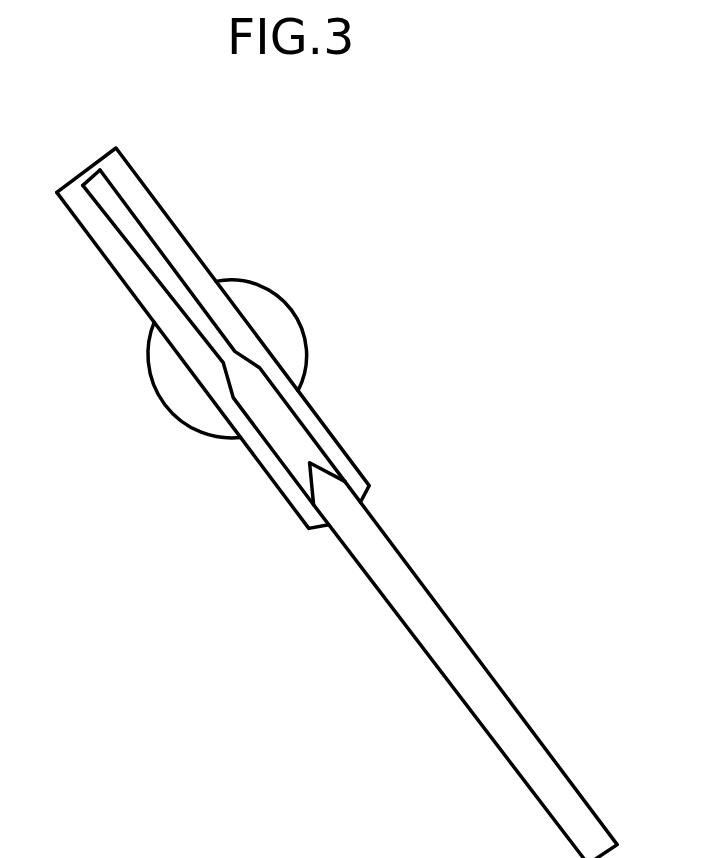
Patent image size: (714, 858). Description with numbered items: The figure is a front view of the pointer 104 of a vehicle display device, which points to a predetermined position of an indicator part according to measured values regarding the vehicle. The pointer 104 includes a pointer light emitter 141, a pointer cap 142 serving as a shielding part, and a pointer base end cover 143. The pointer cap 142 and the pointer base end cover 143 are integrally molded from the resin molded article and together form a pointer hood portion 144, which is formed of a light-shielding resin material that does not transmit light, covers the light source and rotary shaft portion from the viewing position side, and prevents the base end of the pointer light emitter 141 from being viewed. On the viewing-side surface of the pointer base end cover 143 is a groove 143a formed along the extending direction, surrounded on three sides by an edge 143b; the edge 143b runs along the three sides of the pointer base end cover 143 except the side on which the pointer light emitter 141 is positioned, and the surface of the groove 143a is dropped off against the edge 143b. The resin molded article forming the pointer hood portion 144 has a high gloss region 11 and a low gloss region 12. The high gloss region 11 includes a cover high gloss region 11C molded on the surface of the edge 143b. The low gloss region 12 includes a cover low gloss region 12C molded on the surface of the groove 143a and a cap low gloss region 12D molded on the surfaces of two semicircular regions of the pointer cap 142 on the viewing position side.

The high gloss region 11 is at (213, 338).
The cover high gloss region 11C is at (163, 240).
The low gloss region 12 is at (159, 413).
The cover low gloss region 12C is at (263, 425).
The cap low gloss region 12D is at (170, 395).
The pointer 104 is at (450, 287).
The pointer light emitter 141 is at (378, 519).
The pointer cap 142 is at (299, 338).
The pointer base end cover 143 is at (308, 401).
The groove 143a is at (143, 248).
The edge 143b is at (105, 160).
The pointer hood portion 144 is at (383, 287).